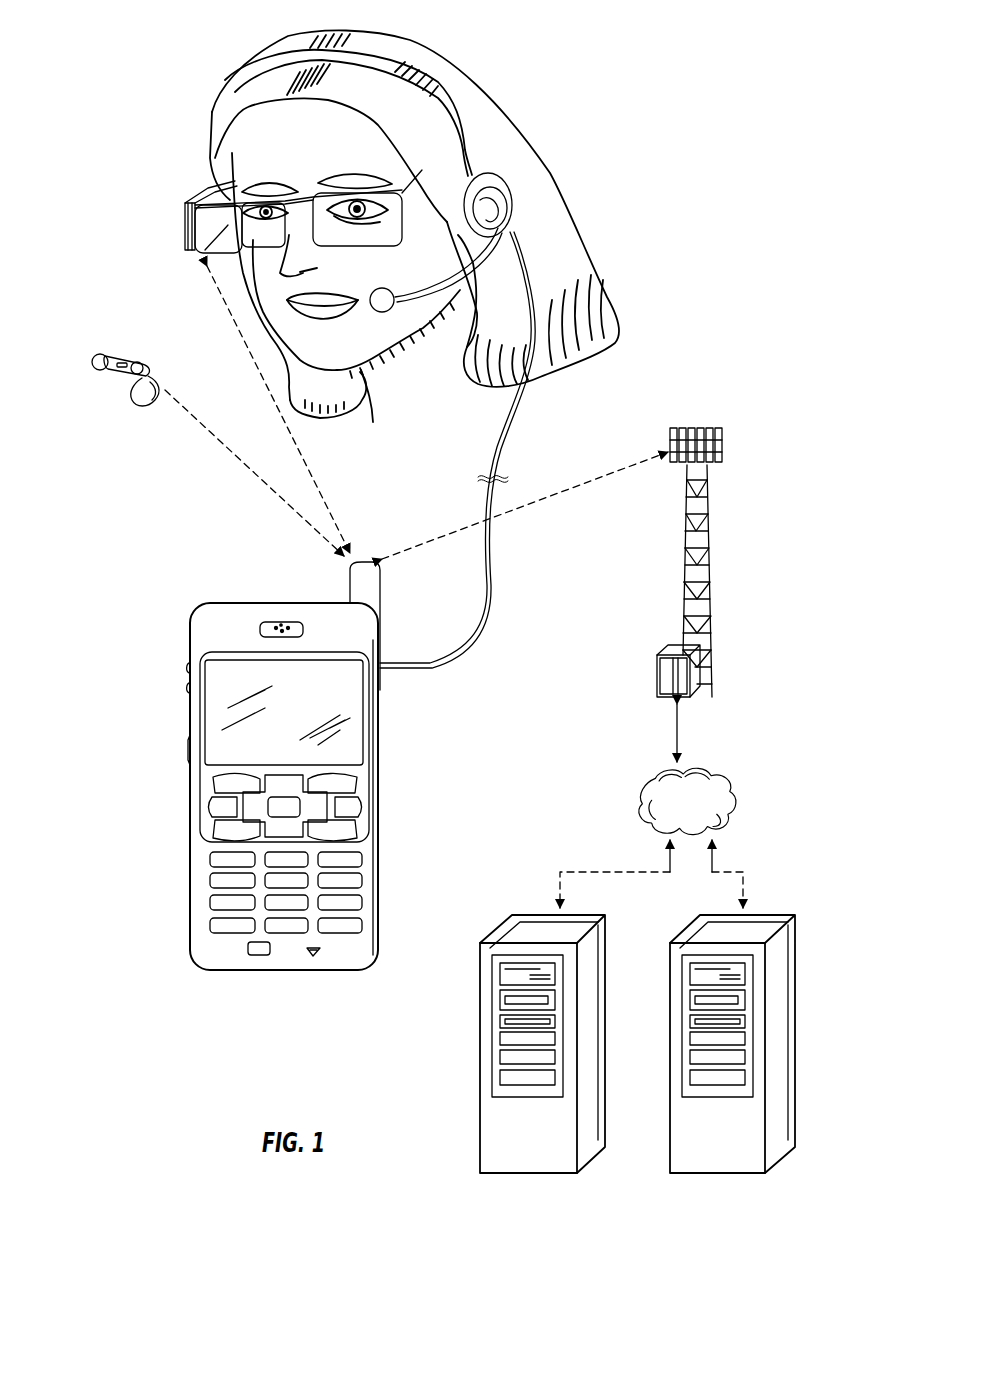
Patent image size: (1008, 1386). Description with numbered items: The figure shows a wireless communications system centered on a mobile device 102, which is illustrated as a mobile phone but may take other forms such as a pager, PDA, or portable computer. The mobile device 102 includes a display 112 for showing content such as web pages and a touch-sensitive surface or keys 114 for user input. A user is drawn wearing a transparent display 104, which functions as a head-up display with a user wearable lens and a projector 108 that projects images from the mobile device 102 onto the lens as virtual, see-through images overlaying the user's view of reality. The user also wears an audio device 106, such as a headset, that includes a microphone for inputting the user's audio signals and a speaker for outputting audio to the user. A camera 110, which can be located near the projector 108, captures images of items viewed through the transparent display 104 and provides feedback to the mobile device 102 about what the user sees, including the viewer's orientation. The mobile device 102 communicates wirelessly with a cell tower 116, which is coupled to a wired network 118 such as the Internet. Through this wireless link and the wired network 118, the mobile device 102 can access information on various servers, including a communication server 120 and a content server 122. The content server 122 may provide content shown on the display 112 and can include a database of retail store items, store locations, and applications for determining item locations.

The mobile device 102 is at (287, 785).
The transparent display 104 is at (188, 249).
The audio device 106 is at (513, 210).
The projector 108 is at (208, 190).
The camera 110 is at (112, 357).
The display 112 is at (360, 735).
The keys 114 is at (247, 865).
The cell tower 116 is at (703, 550).
The wired network 118 is at (738, 787).
The communication server 120 is at (480, 1060).
The content server 122 is at (795, 1034).